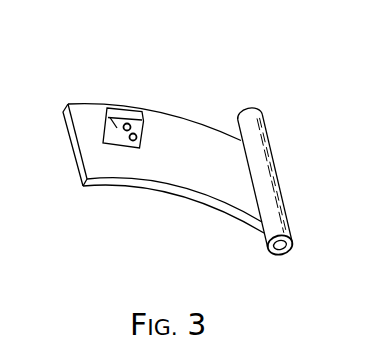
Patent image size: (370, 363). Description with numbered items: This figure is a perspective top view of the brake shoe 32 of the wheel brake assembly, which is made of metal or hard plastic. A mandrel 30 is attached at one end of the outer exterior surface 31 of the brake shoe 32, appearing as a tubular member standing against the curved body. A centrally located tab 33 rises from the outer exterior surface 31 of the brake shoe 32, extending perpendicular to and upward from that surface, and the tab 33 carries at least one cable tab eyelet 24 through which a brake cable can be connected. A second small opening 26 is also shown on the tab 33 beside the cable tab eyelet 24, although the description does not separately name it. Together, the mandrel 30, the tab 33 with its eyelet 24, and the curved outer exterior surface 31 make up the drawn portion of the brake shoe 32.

The cable tab eyelet 24 is at (128, 124).
The aperture 26 is at (135, 134).
The mandrel 30 is at (256, 155).
The outer exterior surface 31 is at (186, 140).
The brake shoe 32 is at (178, 198).
The tab 33 is at (110, 114).